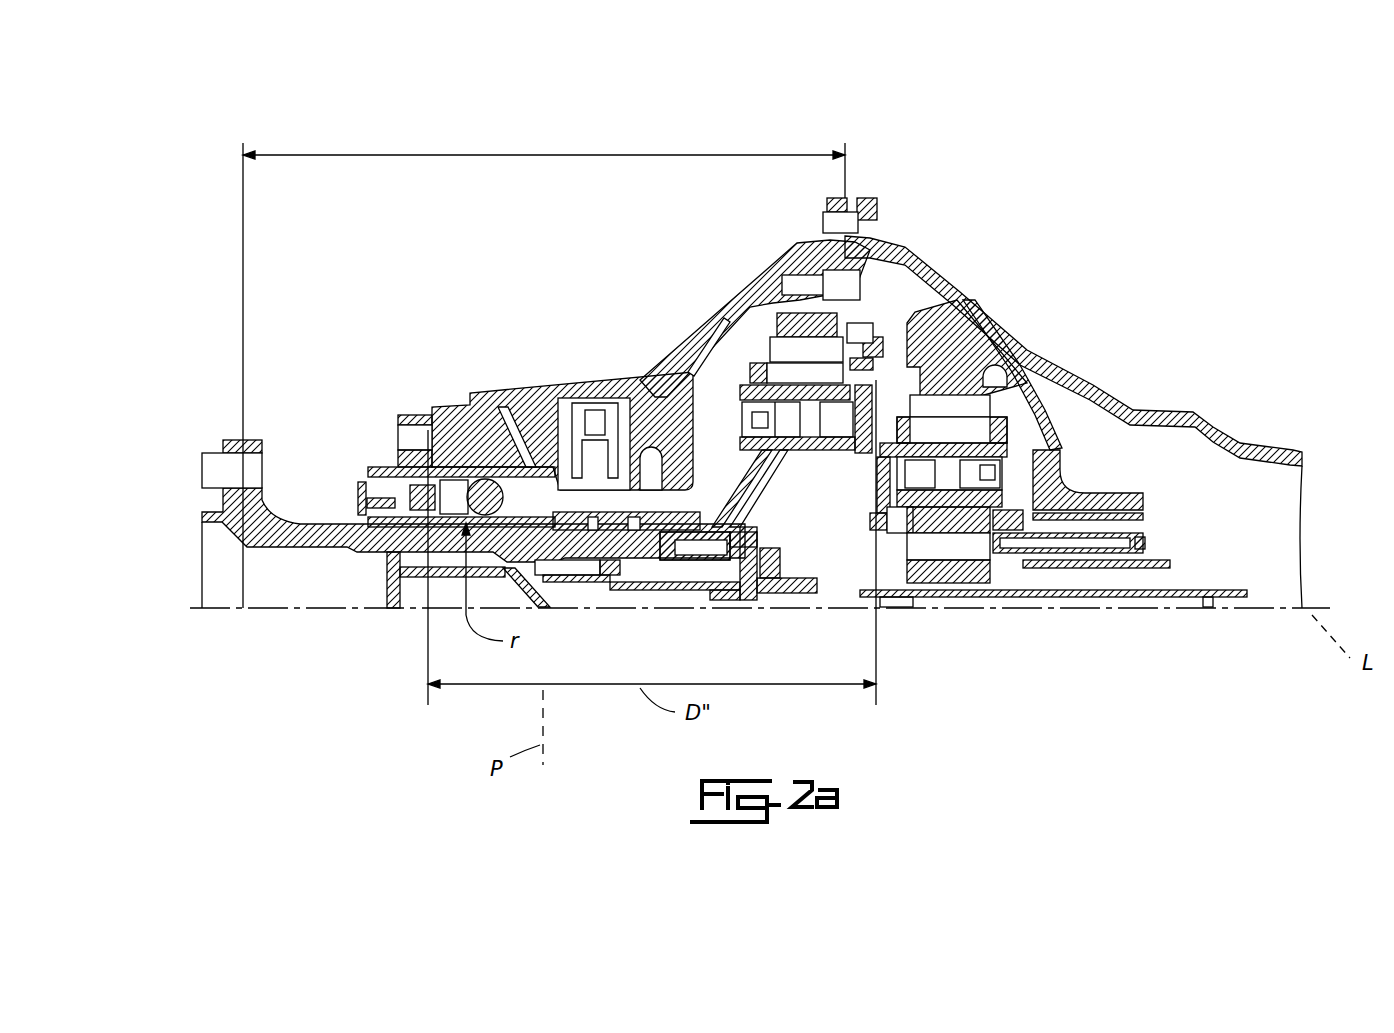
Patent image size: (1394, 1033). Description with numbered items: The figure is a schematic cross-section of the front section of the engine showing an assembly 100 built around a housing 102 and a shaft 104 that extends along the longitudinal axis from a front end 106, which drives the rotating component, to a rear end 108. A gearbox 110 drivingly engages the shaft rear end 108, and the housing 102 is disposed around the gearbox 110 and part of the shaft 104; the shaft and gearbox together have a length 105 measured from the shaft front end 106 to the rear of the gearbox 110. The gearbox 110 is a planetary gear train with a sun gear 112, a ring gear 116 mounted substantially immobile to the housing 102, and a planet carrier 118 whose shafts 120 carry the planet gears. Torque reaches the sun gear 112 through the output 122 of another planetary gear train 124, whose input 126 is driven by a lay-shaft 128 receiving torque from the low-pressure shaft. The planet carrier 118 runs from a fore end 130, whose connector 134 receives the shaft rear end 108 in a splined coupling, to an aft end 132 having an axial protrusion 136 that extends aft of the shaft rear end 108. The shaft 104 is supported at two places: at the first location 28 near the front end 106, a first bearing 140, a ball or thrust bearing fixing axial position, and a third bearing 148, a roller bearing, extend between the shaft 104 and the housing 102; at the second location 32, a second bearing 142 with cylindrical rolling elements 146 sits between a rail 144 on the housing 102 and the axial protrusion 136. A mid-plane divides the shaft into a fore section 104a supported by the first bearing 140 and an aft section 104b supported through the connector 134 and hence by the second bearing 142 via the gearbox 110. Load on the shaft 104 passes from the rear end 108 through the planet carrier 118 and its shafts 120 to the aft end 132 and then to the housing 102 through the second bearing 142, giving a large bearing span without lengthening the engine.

The first location 28 is at (468, 382).
The second location 32 is at (915, 270).
The assembly 100 is at (203, 98).
The housing 102 is at (767, 257).
The shaft 104 is at (265, 556).
The fore section 104a is at (313, 522).
The aft section 104b is at (712, 560).
The length 105 is at (544, 367).
The front end 106 is at (183, 572).
The rear end 108 is at (806, 572).
The gearbox 110 is at (720, 308).
The sun gear 112 is at (888, 530).
The ring gear 116 is at (803, 320).
The planet carrier 118 is at (735, 365).
The shafts of the planet carrier 120 is at (860, 410).
The output 122 is at (962, 573).
The other planetary gear train 124 is at (1040, 440).
The input 126 is at (968, 565).
The lay-shaft 128 is at (1177, 616).
The fore end 130 is at (678, 550).
The aft end 132 is at (975, 297).
The connector 134 is at (695, 546).
The axial protrusion 136 is at (925, 358).
The first bearing 140 is at (500, 460).
The second bearing 142 is at (882, 303).
The rail 144 is at (930, 306).
The rolling elements 146 is at (1003, 342).
The third bearing 148 is at (432, 462).